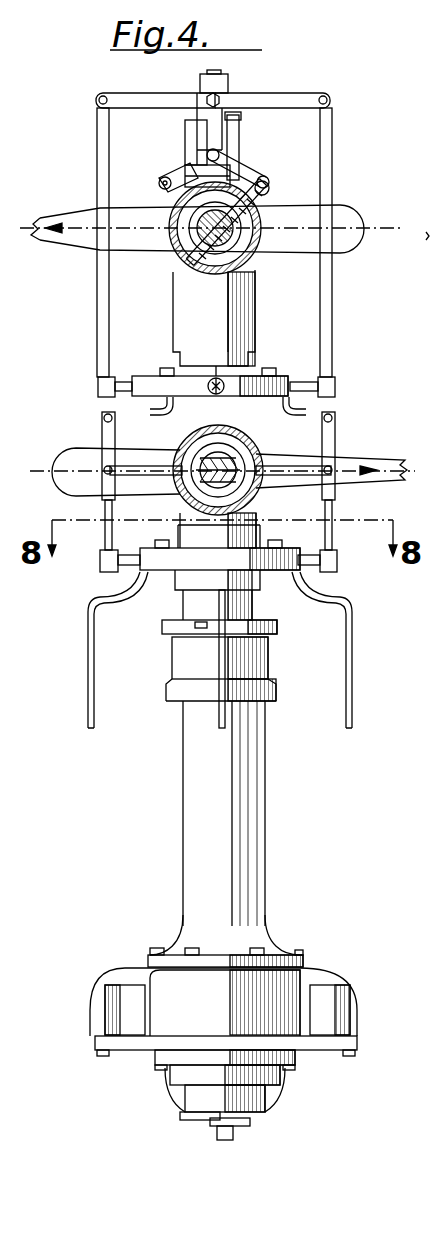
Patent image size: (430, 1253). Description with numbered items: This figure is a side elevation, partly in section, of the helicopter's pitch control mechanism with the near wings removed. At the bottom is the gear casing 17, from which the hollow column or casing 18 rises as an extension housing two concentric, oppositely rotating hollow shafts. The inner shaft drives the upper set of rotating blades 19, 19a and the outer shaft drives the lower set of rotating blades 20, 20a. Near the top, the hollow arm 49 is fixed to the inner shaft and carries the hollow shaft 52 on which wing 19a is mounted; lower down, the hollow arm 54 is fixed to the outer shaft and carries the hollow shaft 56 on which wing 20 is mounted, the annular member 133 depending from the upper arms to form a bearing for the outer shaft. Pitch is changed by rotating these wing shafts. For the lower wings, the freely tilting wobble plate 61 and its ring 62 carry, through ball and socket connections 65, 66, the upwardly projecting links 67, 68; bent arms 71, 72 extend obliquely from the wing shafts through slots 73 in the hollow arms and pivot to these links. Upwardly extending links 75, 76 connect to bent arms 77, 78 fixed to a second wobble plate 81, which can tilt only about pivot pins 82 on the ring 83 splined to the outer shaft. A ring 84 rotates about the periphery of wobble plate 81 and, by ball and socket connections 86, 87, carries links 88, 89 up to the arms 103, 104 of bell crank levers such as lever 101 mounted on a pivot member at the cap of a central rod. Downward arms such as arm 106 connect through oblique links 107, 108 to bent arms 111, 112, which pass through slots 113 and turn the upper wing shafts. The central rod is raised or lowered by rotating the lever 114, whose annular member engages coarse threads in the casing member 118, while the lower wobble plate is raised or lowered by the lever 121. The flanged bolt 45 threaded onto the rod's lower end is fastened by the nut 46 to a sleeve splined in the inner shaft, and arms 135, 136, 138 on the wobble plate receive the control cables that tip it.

The gear casing 17 is at (128, 1000).
The hollow column or casing 18 is at (193, 891).
The upper rotating blade 19 is at (360, 252).
The upper rotating blade 19a is at (50, 240).
The lower rotating blade 20 is at (70, 458).
The lower rotating blade 20a is at (380, 462).
The flanged hollow interiorly threaded bolt 45 is at (236, 1136).
The nut 46 is at (210, 1130).
The hollow arm 49 is at (240, 242).
The hollow shaft 52 is at (250, 262).
The hollow arm 54 is at (250, 508).
The hollow shaft 56 is at (200, 498).
The wobble plate 61 is at (290, 572).
The ring 62 is at (150, 575).
The ball and socket connection 65 is at (108, 565).
The ball and socket connection 66 is at (337, 564).
The upwardly projecting link 67 is at (105, 510).
The upwardly projecting link 68 is at (332, 506).
The bent arm 71 is at (148, 466).
The bent arm 72 is at (295, 466).
The slot 73 is at (195, 480).
The upwardly extending link 75 is at (102, 430).
The upwardly extending link 76 is at (335, 428).
The bent arm 77 is at (158, 418).
The bent arm 78 is at (306, 412).
The wobble plate 81 is at (160, 368).
The pivot pins 82 is at (240, 338).
The ring 83 is at (255, 375).
The ring 84 is at (152, 380).
The ball and socket connection 86 is at (98, 386).
The ball and socket connection 87 is at (335, 384).
The upwardly extending link 88 is at (103, 356).
The upwardly extending link 89 is at (332, 305).
The bell crank lever 101 is at (225, 103).
The arm 103 is at (125, 98).
The arm 104 is at (300, 96).
The arm 106 is at (235, 122).
The oblique link 107 is at (172, 175).
The oblique link 108 is at (243, 162).
The bent arm 111 is at (172, 194).
The bent arm 112 is at (250, 180).
The slot 113 is at (268, 192).
The lever 114 is at (188, 1122).
The casing member 118 is at (262, 1093).
The lever 121 is at (200, 622).
The annular member 133 is at (188, 287).
The arm 135 is at (222, 658).
The arm 136 is at (88, 666).
The arm 138 is at (352, 659).